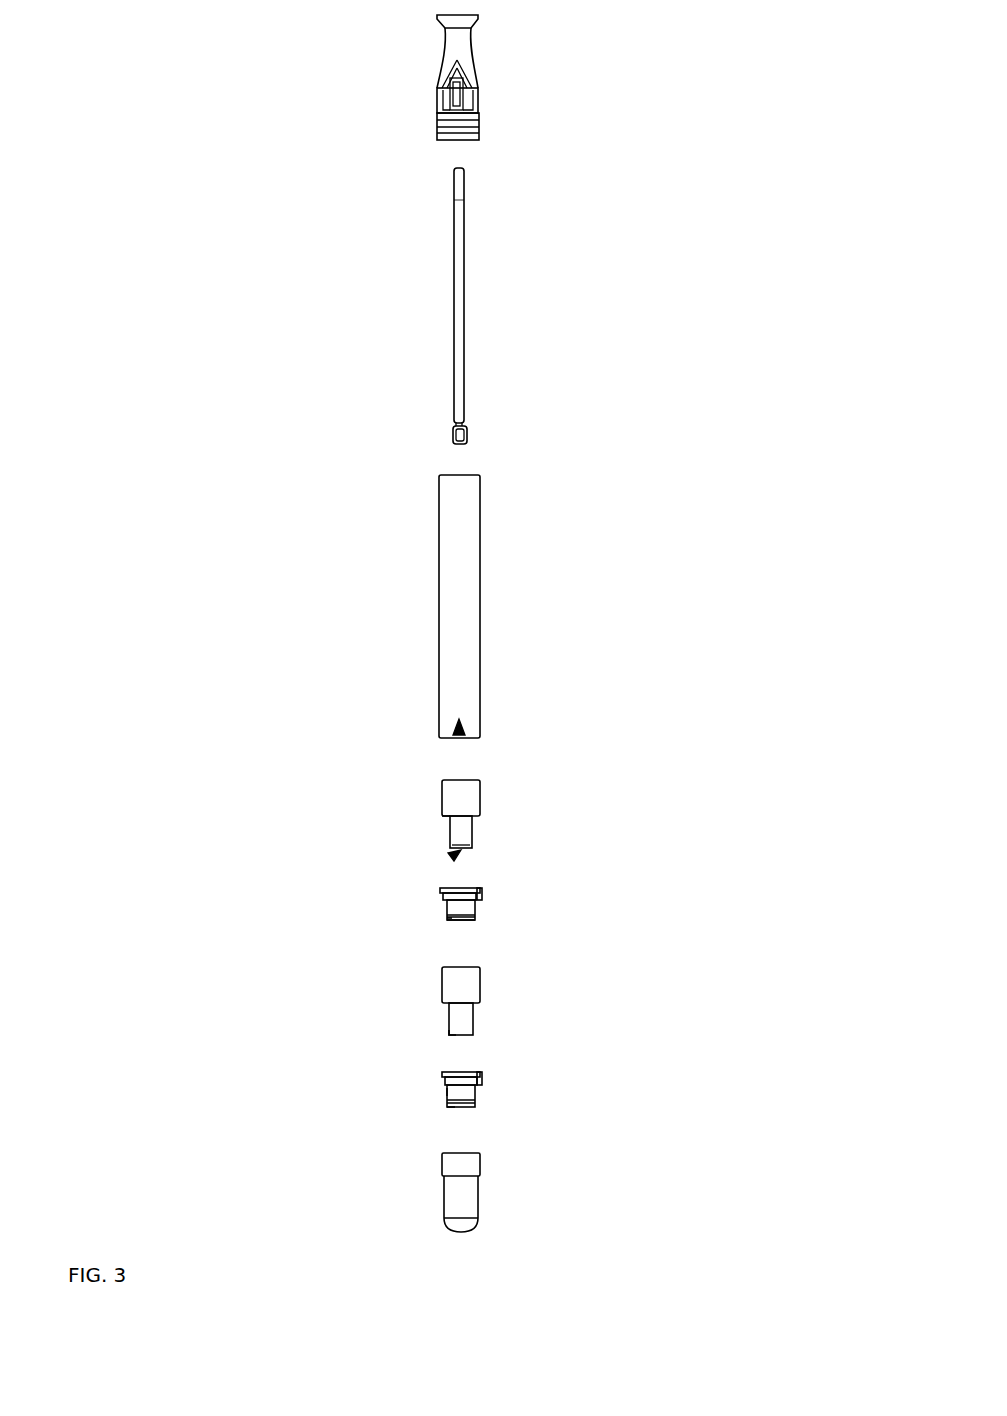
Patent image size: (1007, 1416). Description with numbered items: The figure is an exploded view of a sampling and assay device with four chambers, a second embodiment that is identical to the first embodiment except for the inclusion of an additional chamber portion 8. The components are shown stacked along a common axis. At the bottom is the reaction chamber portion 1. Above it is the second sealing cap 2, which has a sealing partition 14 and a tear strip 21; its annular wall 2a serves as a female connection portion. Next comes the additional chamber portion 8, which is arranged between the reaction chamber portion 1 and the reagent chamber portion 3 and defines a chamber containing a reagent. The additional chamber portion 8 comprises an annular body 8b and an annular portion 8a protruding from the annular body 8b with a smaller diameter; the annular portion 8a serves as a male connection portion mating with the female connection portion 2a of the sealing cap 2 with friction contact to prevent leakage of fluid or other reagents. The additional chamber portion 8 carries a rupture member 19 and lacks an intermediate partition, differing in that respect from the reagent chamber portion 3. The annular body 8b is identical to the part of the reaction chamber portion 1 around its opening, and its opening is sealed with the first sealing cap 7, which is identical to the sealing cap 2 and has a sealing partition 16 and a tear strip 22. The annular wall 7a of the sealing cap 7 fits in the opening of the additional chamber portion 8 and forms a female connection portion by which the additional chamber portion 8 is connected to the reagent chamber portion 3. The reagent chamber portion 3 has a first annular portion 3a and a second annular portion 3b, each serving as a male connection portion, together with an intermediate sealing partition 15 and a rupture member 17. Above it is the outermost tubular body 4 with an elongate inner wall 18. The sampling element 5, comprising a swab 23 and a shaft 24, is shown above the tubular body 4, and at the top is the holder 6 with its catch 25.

The reaction chamber portion 1 is at (470, 1192).
The sealing cap 2 is at (476, 1093).
The annular wall of sealing cap 2a is at (447, 1093).
The reagent chamber portion 3 is at (514, 804).
The first annular portion of reagent chamber portion 3a is at (470, 843).
The second annular portion of reagent chamber portion 3b is at (483, 804).
The tubular body 4 is at (480, 617).
The sampling element 5 is at (470, 290).
The holder 6 is at (466, 63).
The sealing cap 7 is at (470, 905).
The annular wall of sealing cap 7a is at (473, 917).
The additional chamber portion 8 is at (546, 999).
The annular portion of additional chamber portion 8a is at (473, 1017).
The annular body of additional chamber portion 8b is at (483, 980).
The sealing partition of sealing cap 14 is at (447, 1105).
The sealing partition of reagent chamber portion 15 is at (443, 817).
The sealing partition of sealing cap 16 is at (446, 918).
The rupture member of reagent chamber portion 17 is at (453, 856).
The wall of tubular body 18 is at (459, 735).
The rupture member of additional chamber portion 19 is at (450, 1031).
The tear strip of sealing cap 21 is at (482, 1076).
The tear strip of sealing cap 22 is at (485, 892).
The swab 23 is at (467, 442).
The shaft 24 is at (455, 214).
The catch 25 is at (458, 101).